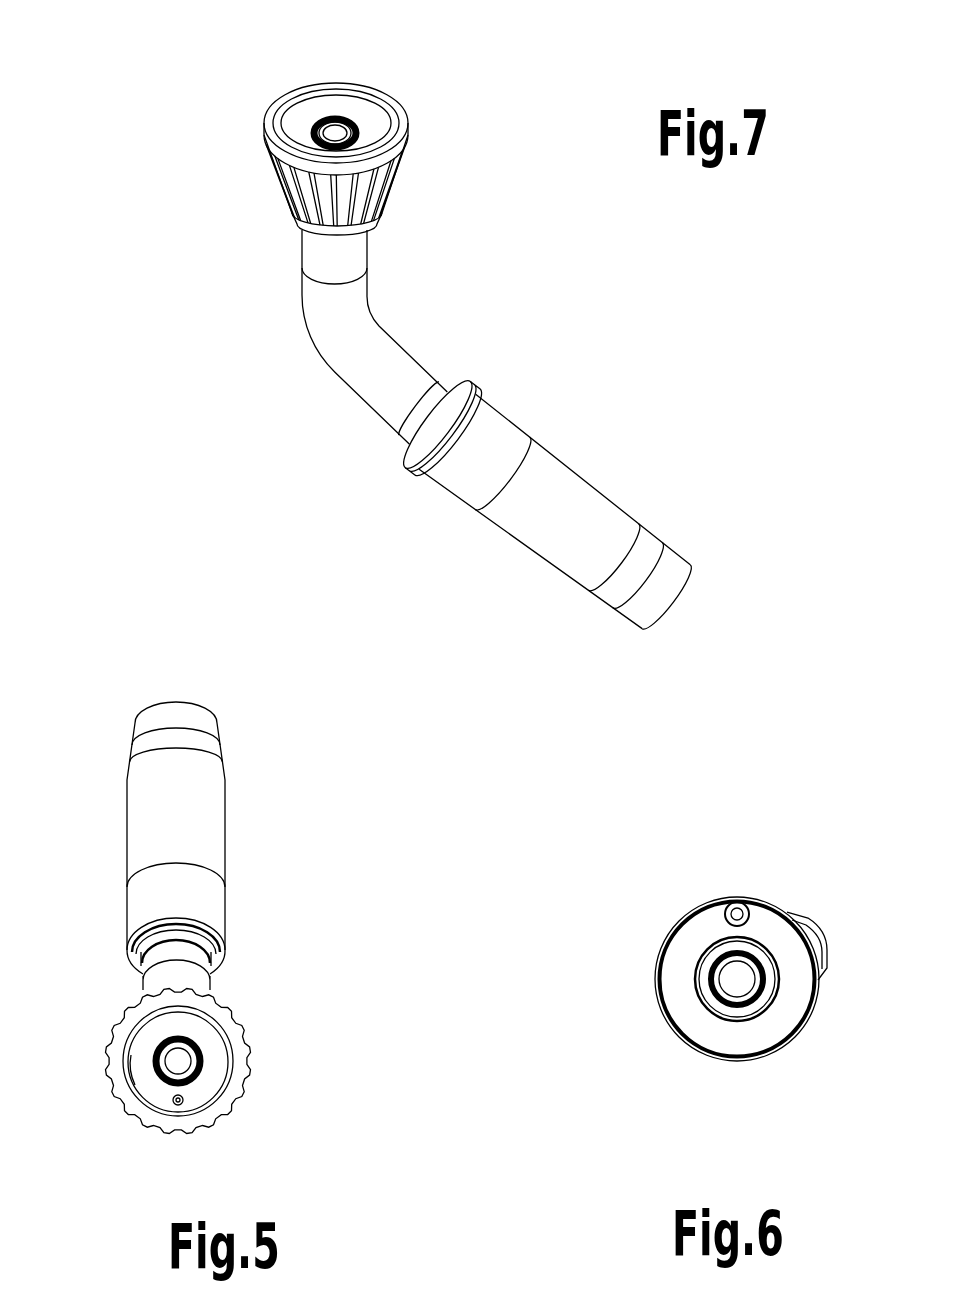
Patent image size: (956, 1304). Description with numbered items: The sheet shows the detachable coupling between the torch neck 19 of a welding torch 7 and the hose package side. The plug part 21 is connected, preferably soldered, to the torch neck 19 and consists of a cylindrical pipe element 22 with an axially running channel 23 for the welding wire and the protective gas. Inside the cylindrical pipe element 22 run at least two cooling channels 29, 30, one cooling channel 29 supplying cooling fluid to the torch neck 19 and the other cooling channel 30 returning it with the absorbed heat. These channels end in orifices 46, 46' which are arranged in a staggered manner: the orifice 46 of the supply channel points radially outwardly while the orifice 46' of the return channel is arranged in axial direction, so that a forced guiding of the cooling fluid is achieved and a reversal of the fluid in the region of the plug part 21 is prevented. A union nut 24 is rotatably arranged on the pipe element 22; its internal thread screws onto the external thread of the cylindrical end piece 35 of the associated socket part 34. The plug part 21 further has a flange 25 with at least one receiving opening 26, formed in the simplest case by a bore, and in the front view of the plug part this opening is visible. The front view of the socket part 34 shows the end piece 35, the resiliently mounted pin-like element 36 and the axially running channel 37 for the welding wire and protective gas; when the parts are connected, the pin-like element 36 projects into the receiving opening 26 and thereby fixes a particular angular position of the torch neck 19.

In FIG. 7, the welding torch 7 is at (573, 332).
In FIG. 5, the welding torch 7 is at (322, 822).
In FIG. 7, the torch neck 19 is at (348, 357).
In FIG. 5, the torch neck 19 is at (187, 949).
In FIG. 7, the plug part 21 is at (233, 163).
In FIG. 5, the plug part 21 is at (310, 1049).
In FIG. 7, the cylindrical pipe element 22 is at (385, 146).
In FIG. 7, the channel 23 is at (353, 130).
In FIG. 5, the channel 23 is at (155, 1048).
In FIG. 7, the union nut 24 is at (372, 187).
In FIG. 5, the union nut 24 is at (113, 1070).
In FIG. 5, the flange 25 is at (208, 1080).
In FIG. 5, the receiving opening 26 is at (175, 1107).
In FIG. 7, the cooling channel 29 is at (318, 140).
In FIG. 7, the cooling channel 30 is at (315, 120).
In FIG. 6, the socket part 34 is at (637, 924).
In FIG. 6, the end piece 35 is at (770, 1053).
In FIG. 6, the pin-like element 36 is at (739, 904).
In FIG. 6, the channel 37 is at (739, 978).
In FIG. 7, the orifice 46 is at (264, 201).
In FIG. 7, the orifice 46' is at (389, 83).